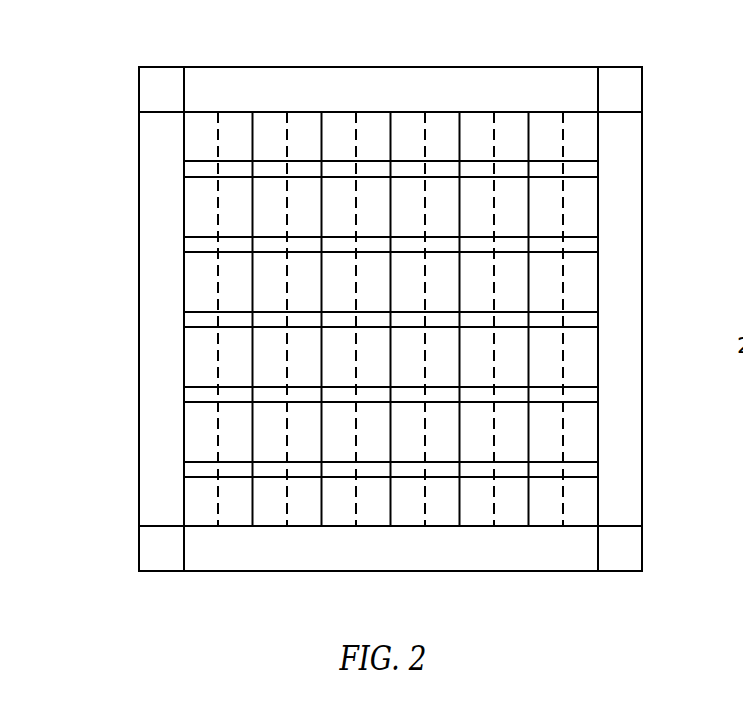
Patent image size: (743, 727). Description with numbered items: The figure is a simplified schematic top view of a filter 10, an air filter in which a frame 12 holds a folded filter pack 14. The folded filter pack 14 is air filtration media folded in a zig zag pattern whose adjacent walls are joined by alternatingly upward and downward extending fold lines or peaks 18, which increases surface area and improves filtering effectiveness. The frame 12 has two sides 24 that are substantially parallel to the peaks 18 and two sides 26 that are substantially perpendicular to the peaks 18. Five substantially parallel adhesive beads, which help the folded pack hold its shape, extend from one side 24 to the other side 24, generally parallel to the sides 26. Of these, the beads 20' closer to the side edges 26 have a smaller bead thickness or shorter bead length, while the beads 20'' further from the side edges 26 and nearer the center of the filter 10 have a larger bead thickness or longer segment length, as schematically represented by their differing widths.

The filter 10 is at (660, 76).
The frame 12 is at (628, 150).
The folded filter pack 14 is at (183, 526).
The peaks 18 is at (393, 133).
The adhesive beads closer to side edges 20' is at (390, 319).
The adhesive beads further from side edges 20'' is at (440, 319).
The sides 24 is at (183, 285).
The sides 26 is at (303, 112).